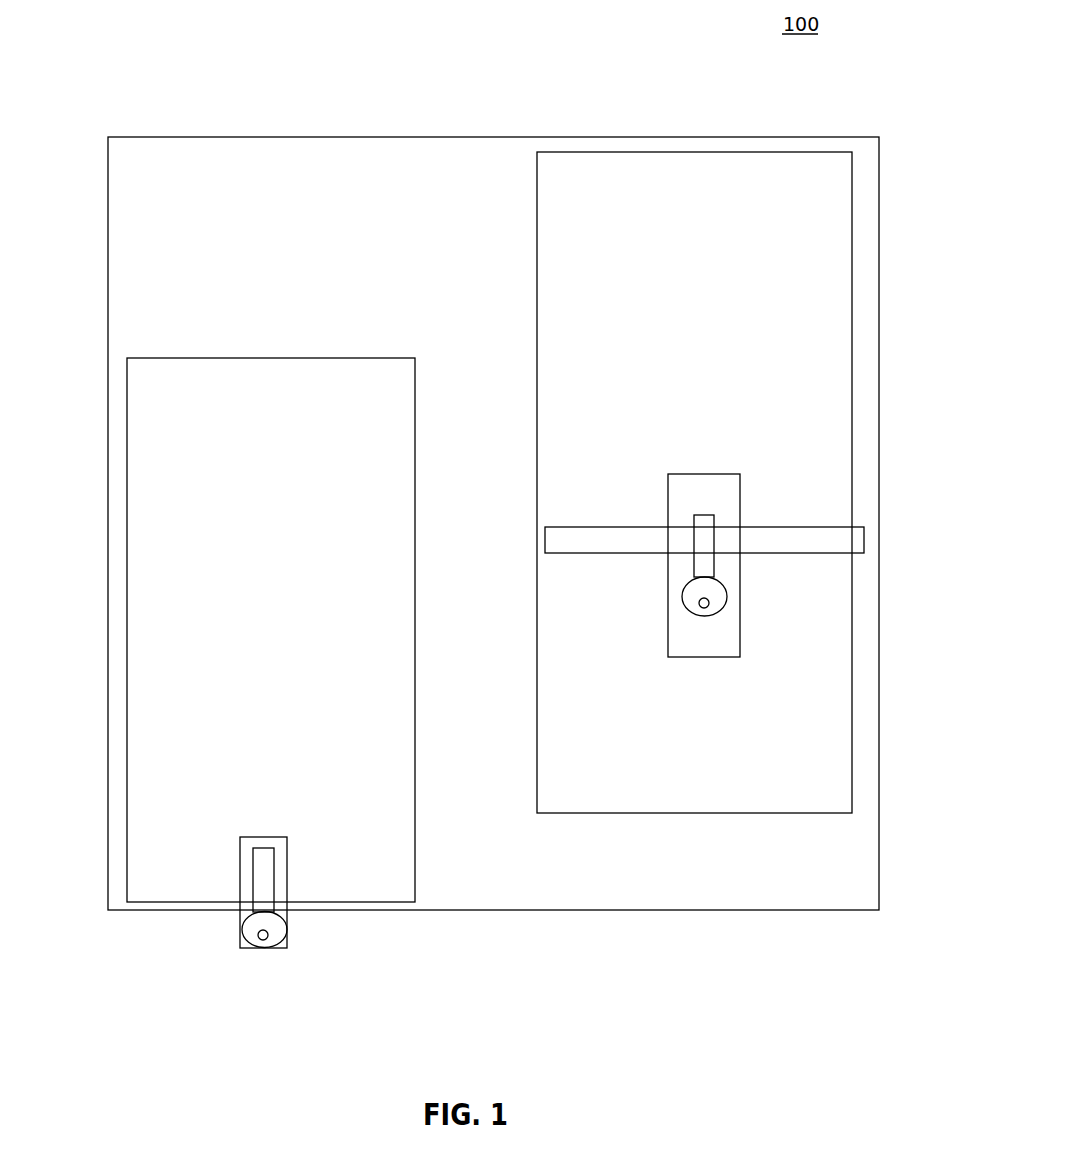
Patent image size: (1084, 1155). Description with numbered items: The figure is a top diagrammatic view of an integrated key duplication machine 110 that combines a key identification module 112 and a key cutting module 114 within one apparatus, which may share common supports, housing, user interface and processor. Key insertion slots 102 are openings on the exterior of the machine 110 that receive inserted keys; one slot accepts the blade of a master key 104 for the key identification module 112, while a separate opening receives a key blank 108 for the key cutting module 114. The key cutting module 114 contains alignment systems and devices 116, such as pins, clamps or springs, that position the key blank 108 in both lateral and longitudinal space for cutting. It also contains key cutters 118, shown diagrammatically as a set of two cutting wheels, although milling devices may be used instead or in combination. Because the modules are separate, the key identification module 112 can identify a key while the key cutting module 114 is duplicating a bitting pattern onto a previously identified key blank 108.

The key insertion slot 102 is at (240, 870).
The master key 104 is at (240, 935).
The key blank 108 is at (690, 613).
The integrated key duplication machine 110 is at (108, 168).
The key identification module 112 is at (127, 553).
The key cutting module 114 is at (538, 378).
The alignment systems and devices 116 is at (707, 658).
The key cutter 118 is at (805, 538).